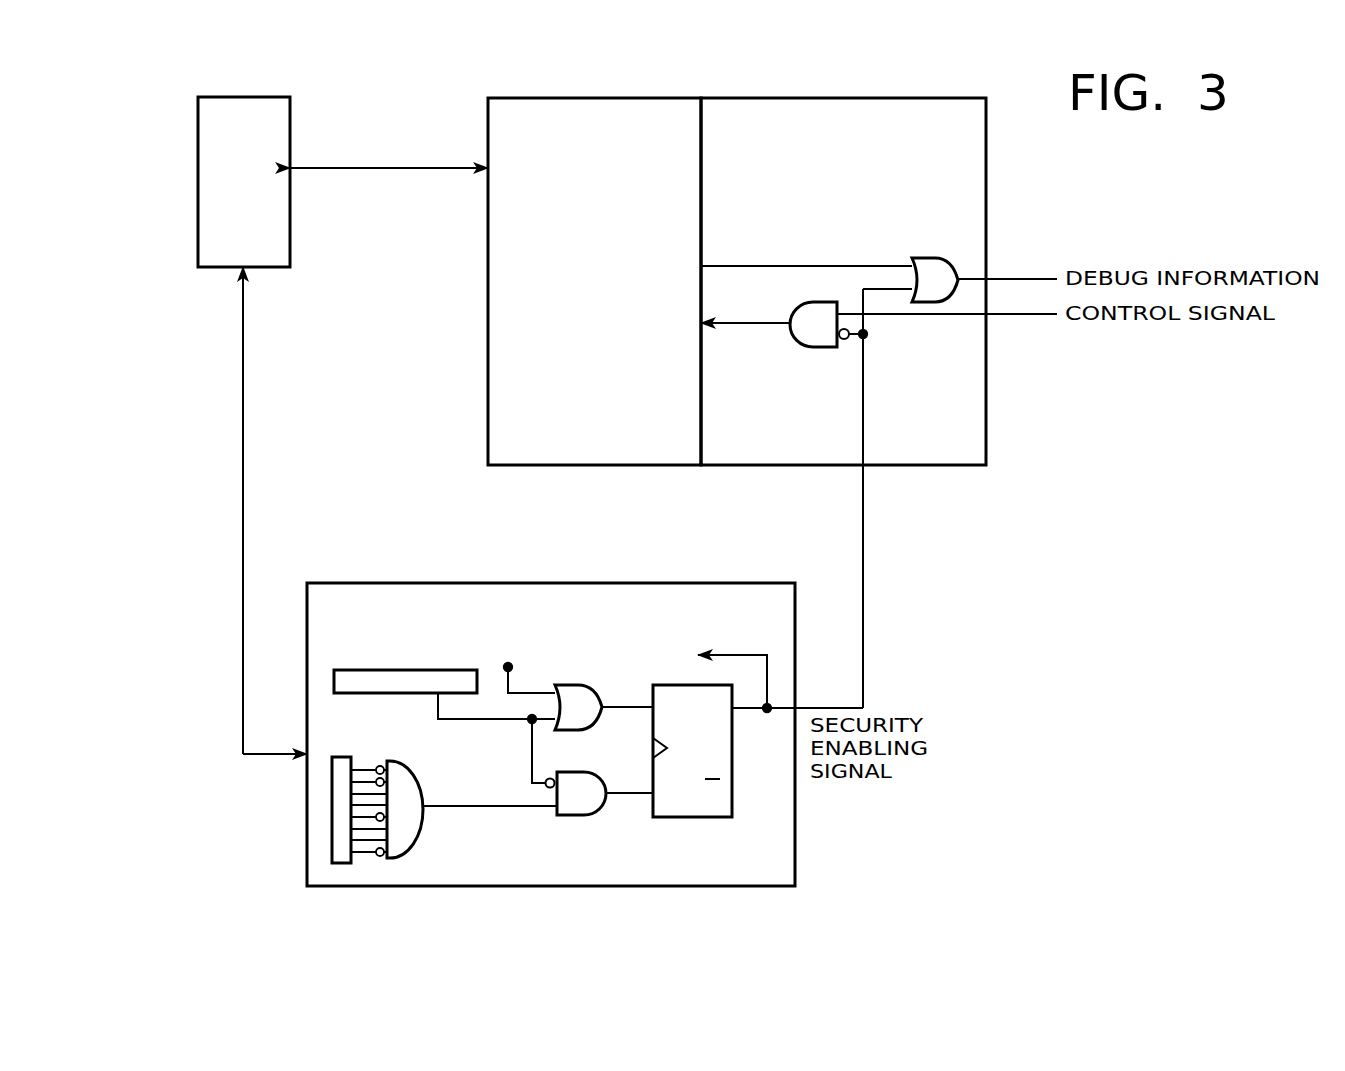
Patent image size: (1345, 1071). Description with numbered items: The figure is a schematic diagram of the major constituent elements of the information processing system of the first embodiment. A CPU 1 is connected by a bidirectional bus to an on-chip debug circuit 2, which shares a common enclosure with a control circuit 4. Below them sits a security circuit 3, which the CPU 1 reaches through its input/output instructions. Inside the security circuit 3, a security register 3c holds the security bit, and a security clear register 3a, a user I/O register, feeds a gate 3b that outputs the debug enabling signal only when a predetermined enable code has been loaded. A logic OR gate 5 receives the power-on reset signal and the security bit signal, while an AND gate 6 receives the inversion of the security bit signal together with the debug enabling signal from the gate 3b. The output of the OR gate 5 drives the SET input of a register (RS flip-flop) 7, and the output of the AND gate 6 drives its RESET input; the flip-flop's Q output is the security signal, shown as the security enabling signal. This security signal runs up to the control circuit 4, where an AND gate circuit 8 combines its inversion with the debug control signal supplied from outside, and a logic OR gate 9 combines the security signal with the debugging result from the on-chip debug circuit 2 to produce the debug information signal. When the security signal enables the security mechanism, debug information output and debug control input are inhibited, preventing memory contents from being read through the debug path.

The CPU 1 is at (248, 96).
The on-chip debug circuit 2 is at (602, 97).
The security circuit 3 is at (348, 582).
The security clear register 3a is at (345, 756).
The gate 3b is at (418, 781).
The security register 3c is at (348, 668).
The control circuit 4 is at (880, 97).
The logic OR gate 5 is at (598, 724).
The AND gate 6 is at (582, 818).
The register (RS flip-flop) 7 is at (688, 818).
The AND gate circuit 8 is at (812, 348).
The logic OR gate 9 is at (928, 258).